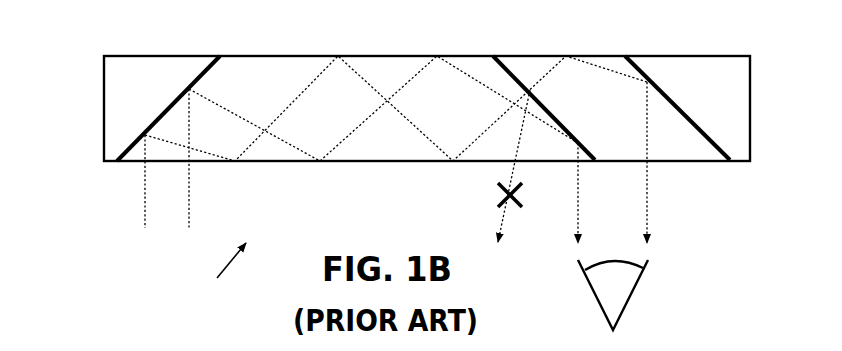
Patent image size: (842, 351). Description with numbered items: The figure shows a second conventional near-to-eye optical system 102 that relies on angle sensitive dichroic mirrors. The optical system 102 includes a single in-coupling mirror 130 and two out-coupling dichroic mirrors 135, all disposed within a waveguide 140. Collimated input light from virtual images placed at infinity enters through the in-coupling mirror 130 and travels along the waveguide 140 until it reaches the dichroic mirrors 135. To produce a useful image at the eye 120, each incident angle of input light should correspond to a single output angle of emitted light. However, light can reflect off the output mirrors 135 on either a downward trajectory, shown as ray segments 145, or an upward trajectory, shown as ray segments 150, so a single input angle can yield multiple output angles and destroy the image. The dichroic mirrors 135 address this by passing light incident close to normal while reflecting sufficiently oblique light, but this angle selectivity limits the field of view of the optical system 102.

The near-to-eye optical system 102 is at (219, 271).
The eye 120 is at (630, 298).
The in-coupling mirror 130 is at (170, 107).
The out-coupling dichroic mirrors 135 is at (517, 75).
The waveguide 140 is at (267, 56).
The ray segments 145 is at (452, 65).
The ray segments 150 is at (492, 128).